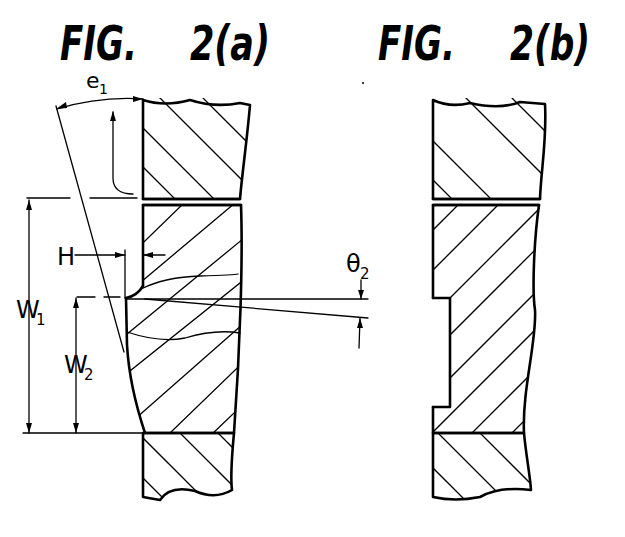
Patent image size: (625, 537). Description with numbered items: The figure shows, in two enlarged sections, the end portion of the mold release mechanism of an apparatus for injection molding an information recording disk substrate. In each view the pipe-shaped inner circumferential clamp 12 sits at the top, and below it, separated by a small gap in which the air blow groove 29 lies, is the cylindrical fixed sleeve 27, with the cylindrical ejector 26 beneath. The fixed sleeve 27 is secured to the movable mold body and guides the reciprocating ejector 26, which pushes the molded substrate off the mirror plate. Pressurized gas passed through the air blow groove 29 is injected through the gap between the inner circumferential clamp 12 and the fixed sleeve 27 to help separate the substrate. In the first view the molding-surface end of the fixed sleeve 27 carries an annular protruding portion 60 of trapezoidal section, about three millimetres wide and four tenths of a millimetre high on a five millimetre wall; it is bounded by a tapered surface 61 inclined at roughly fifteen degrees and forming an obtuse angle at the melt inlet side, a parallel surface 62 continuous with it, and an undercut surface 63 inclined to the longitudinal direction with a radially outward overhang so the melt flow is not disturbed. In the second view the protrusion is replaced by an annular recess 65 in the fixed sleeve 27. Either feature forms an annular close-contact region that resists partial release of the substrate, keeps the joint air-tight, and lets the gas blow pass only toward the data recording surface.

In FIG. 2A, the inner circumferential clamp 12 is at (237, 135).
In FIG. 2B, the inner circumferential clamp 12 is at (525, 137).
In FIG. 2A, the air blow groove 29 is at (241, 204).
In FIG. 2B, the air blow groove 29 is at (541, 203).
In FIG. 2A, the fixed sleeve 27 is at (230, 408).
In FIG. 2B, the fixed sleeve 27 is at (500, 388).
In FIG. 2A, the ejector 26 is at (217, 470).
In FIG. 2B, the ejector 26 is at (503, 470).
In FIG. 2A, the annular protruding portion 60 is at (190, 371).
In FIG. 2A, the tapered surface 61 is at (133, 400).
In FIG. 2A, the parallel surface 62 is at (240, 333).
In FIG. 2A, the undercut surface 63 is at (238, 274).
In FIG. 2B, the annular recess 65 is at (450, 385).